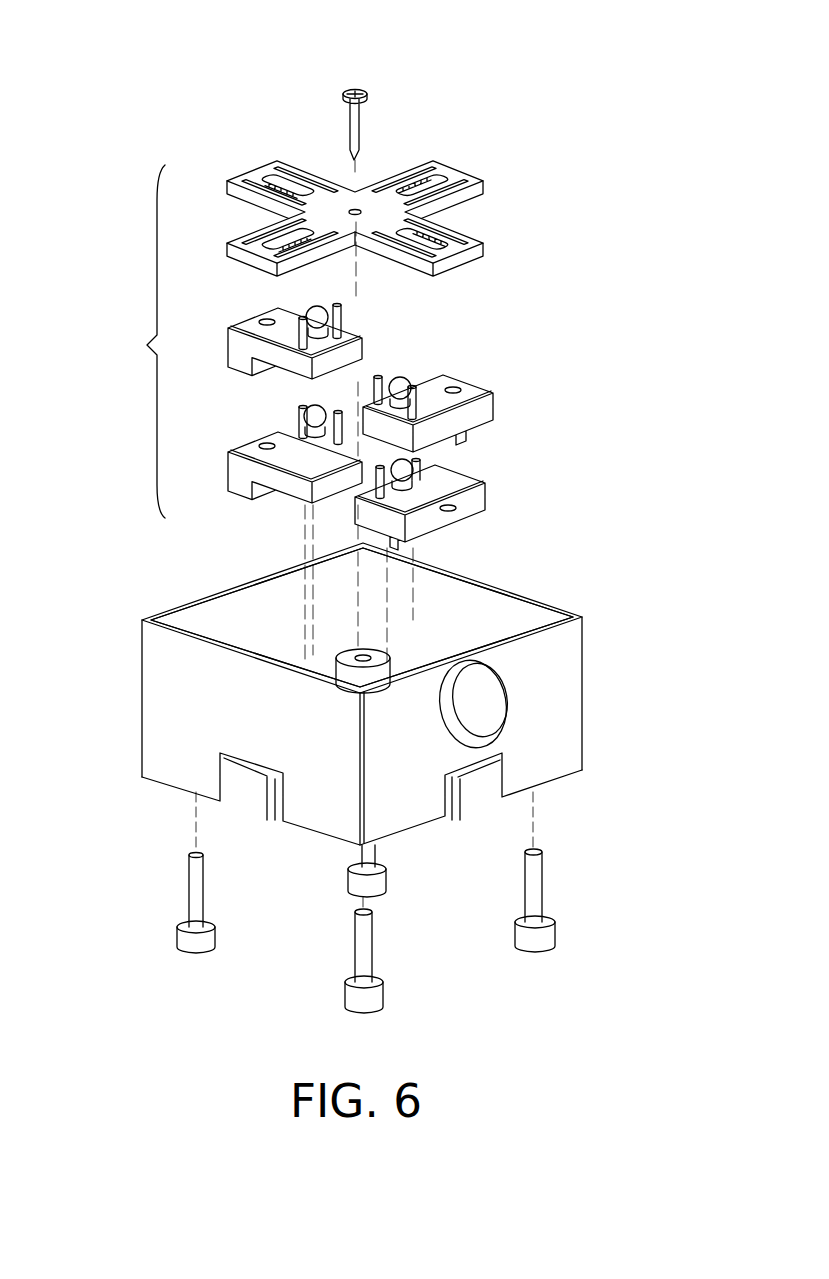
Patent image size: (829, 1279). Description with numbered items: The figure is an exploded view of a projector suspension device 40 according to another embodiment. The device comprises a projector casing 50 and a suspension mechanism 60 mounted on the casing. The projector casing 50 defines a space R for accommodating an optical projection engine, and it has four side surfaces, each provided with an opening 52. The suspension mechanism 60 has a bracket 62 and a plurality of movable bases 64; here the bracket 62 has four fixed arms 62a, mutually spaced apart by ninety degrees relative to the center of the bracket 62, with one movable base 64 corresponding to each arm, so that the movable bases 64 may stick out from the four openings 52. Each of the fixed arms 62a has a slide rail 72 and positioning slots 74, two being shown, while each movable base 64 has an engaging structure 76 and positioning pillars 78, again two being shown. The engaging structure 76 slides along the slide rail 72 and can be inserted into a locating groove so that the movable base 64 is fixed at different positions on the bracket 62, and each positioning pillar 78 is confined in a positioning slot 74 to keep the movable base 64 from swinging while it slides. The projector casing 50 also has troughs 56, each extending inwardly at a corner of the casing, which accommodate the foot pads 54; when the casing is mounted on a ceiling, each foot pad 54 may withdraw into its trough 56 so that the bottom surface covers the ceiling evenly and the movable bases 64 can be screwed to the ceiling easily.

The projector suspension device 40 is at (103, 46).
The projector casing 50 is at (297, 724).
The openings 52 is at (252, 803).
The foot pads 54 is at (540, 940).
The troughs 56 is at (350, 655).
The suspension mechanism 60 is at (135, 341).
The bracket 62 is at (407, 194).
The fixed arms 62a is at (262, 176).
The movable bases 64 is at (417, 426).
The slide rail 72 is at (447, 178).
The positioning slot 74 is at (400, 182).
The engaging structure 76 is at (408, 376).
The positioning pillar 78 is at (379, 375).
The space R is at (441, 643).